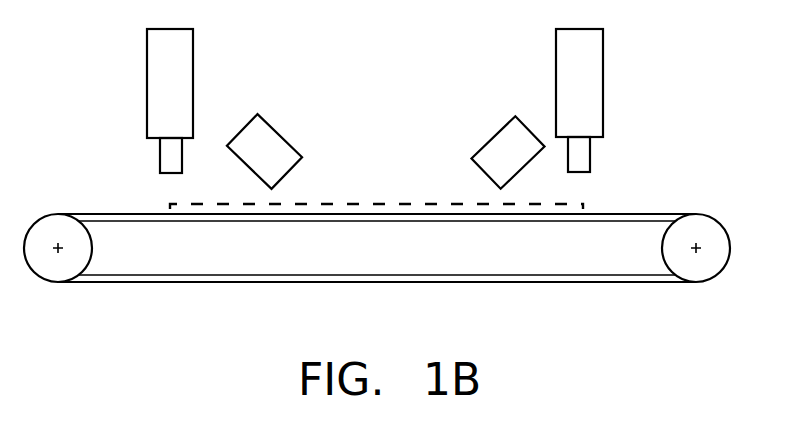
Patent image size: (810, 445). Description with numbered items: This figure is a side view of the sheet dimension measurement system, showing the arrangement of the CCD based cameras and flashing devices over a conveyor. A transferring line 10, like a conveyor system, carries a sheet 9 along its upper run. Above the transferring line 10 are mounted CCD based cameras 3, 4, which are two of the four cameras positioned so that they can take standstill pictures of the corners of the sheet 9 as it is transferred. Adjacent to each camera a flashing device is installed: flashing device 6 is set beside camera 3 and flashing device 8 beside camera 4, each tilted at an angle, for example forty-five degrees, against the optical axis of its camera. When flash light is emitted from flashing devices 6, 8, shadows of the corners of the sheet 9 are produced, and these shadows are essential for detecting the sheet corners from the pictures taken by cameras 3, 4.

The CCD based camera 3 is at (193, 61).
The CCD based camera 4 is at (607, 82).
The flashing device 6 is at (282, 134).
The flashing device 8 is at (495, 135).
The sheet 9 is at (352, 205).
The transferring line 10 is at (108, 220).